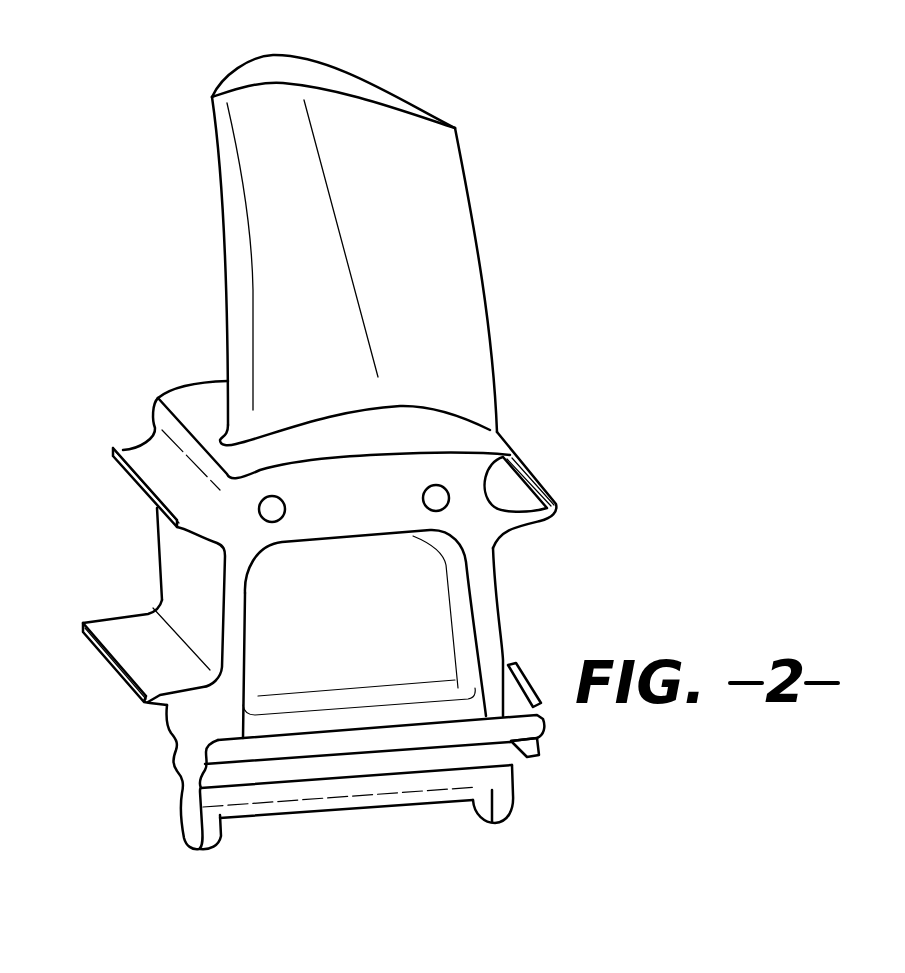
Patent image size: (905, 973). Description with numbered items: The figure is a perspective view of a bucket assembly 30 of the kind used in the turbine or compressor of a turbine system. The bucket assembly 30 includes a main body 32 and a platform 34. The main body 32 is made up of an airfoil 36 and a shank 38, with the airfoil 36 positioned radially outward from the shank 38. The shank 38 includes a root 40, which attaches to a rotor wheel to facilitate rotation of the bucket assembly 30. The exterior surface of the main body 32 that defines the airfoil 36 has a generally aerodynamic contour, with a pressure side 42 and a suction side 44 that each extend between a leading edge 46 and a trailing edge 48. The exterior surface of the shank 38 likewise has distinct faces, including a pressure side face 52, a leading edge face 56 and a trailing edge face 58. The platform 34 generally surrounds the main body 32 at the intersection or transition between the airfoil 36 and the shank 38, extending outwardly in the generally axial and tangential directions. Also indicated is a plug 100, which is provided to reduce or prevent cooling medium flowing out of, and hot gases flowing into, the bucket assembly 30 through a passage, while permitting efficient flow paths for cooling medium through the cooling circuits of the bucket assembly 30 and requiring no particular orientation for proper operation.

The bucket assembly 30 is at (536, 212).
The main body 32 is at (118, 522).
The platform 34 is at (140, 398).
The airfoil 36 is at (278, 234).
The shank 38 is at (170, 565).
The root 40 is at (180, 829).
The pressure side 42 is at (353, 102).
The suction side 44 is at (347, 73).
The leading edge 46 is at (212, 95).
The trailing edge 48 is at (457, 128).
The pressure side face 52 is at (417, 648).
The leading edge face 56 is at (173, 598).
The trailing edge face 58 is at (500, 610).
The plug 100 is at (265, 516).